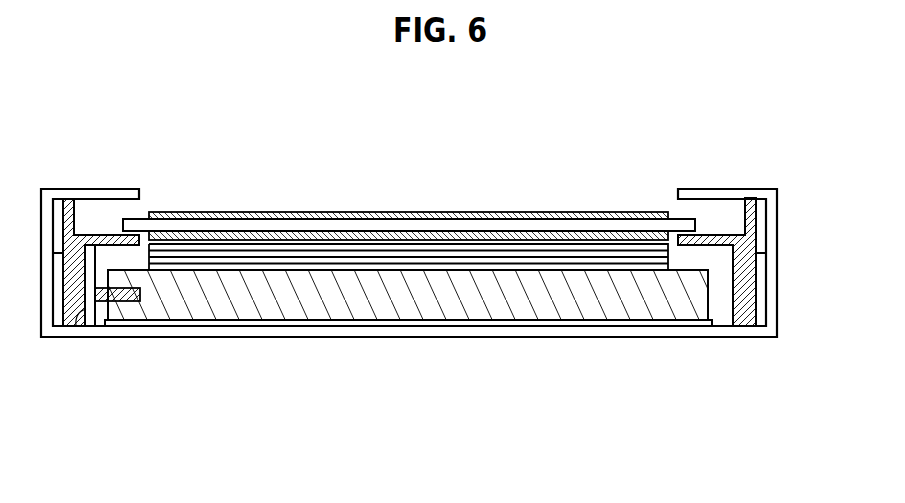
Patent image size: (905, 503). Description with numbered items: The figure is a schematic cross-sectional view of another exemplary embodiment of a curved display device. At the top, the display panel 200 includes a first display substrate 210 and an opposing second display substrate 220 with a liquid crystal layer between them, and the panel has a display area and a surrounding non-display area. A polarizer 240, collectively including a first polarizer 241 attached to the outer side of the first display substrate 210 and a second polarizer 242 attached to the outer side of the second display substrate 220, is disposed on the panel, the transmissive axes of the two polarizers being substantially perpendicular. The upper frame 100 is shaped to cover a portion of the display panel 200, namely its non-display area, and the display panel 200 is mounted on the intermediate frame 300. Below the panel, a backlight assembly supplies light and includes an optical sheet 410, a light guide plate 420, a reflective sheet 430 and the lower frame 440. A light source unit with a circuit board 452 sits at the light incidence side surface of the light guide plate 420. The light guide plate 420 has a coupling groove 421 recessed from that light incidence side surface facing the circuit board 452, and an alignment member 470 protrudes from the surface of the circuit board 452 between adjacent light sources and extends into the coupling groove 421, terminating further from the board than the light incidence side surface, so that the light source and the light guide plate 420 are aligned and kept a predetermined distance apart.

The upper frame 100 is at (728, 190).
The display panel 200 is at (515, 145).
The first display substrate 210 is at (515, 233).
The second display substrate 220 is at (448, 223).
The polarizer 240 is at (332, 145).
The first polarizer 241 is at (333, 238).
The second polarizer 242 is at (265, 215).
The intermediate frame 300 is at (750, 287).
The optical sheet 410 is at (518, 267).
The light guide plate 420 is at (442, 302).
The coupling groove 421 is at (128, 297).
The reflective sheet 430 is at (385, 322).
The lower frame 440 is at (325, 332).
The circuit board 452 is at (73, 326).
The alignment member 470 is at (120, 292).